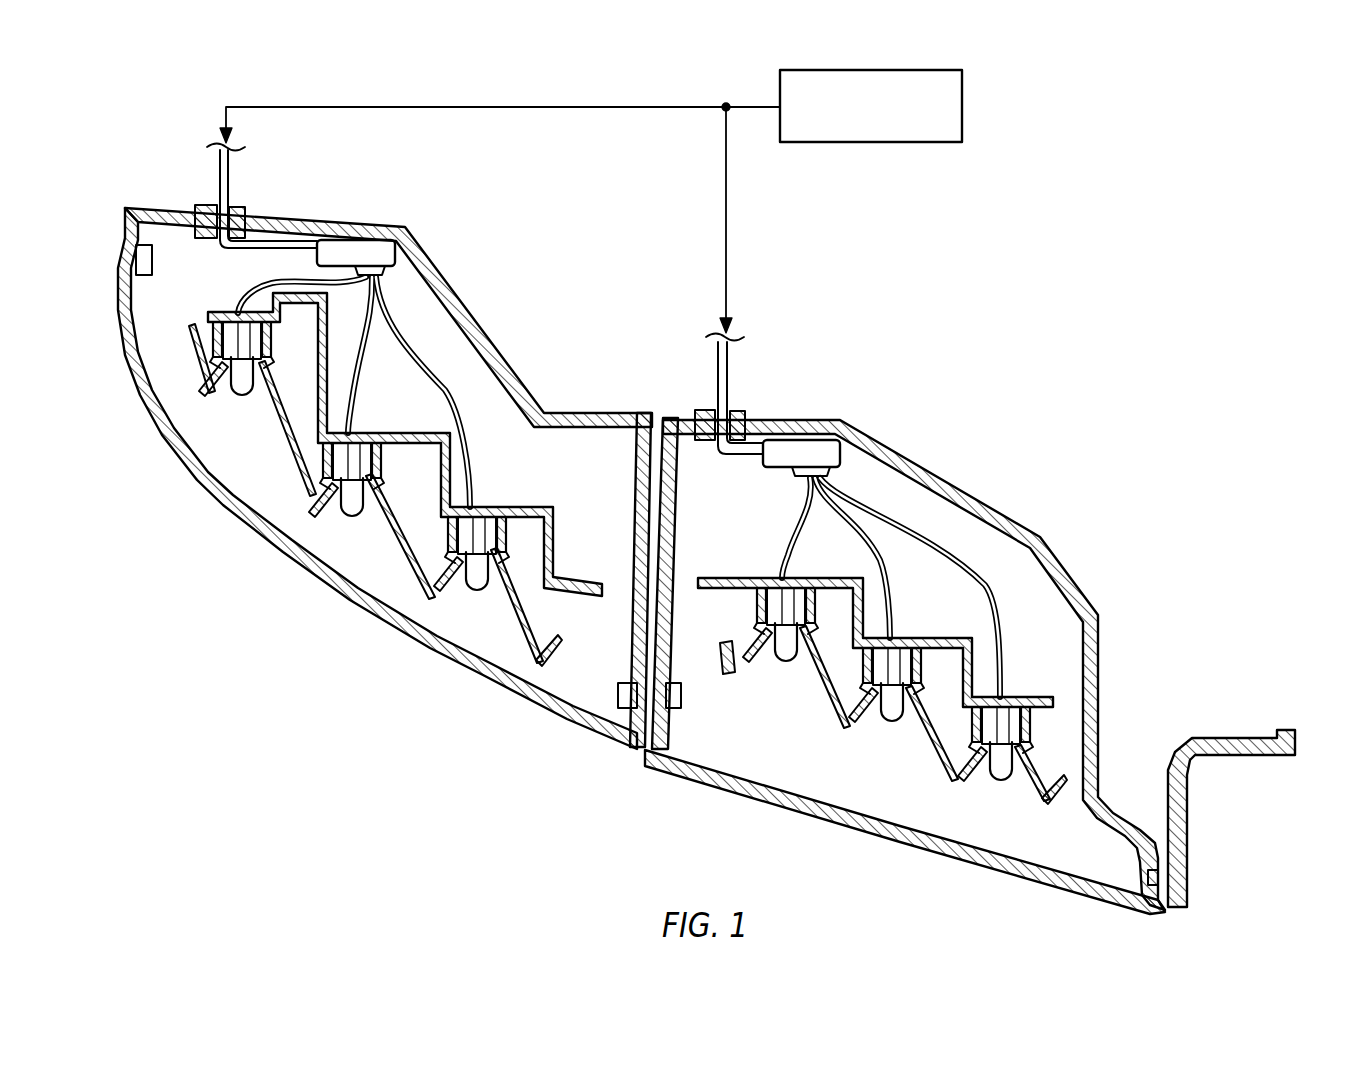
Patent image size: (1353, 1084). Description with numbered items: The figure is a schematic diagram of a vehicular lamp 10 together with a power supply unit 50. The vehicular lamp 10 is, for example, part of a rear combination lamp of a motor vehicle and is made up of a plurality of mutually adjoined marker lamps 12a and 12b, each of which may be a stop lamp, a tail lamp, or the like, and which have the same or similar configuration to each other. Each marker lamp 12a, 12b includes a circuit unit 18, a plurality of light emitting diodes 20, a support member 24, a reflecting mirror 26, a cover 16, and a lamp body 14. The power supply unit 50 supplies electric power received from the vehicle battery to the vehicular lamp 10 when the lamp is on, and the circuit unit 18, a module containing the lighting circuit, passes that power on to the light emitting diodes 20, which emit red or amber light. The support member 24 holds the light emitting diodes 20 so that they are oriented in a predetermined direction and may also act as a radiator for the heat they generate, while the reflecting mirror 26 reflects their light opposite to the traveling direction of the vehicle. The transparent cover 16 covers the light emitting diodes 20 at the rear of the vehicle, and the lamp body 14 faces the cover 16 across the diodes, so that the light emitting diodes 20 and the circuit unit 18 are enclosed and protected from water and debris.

The vehicular lamp 10 is at (615, 845).
The marker lamp 12a is at (420, 698).
The marker lamp 12b is at (633, 768).
The lamp body 14 is at (520, 392).
The cover 16 is at (347, 602).
The circuit unit 18 is at (357, 247).
The light emitting diodes 20 is at (242, 400).
The support member 24 is at (536, 506).
The reflecting mirror 26 is at (540, 606).
The power supply unit 50 is at (962, 106).